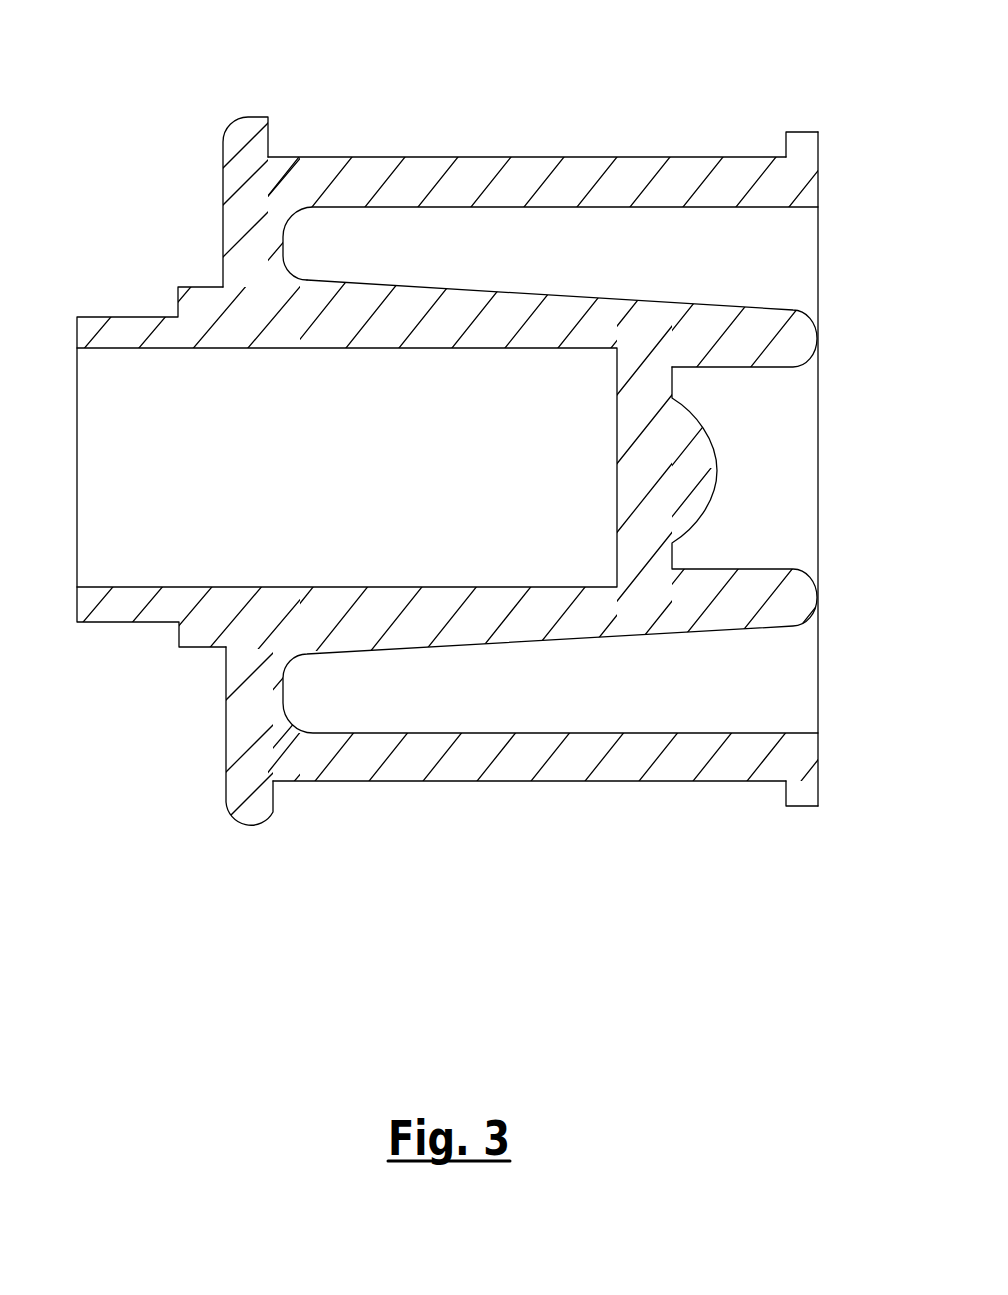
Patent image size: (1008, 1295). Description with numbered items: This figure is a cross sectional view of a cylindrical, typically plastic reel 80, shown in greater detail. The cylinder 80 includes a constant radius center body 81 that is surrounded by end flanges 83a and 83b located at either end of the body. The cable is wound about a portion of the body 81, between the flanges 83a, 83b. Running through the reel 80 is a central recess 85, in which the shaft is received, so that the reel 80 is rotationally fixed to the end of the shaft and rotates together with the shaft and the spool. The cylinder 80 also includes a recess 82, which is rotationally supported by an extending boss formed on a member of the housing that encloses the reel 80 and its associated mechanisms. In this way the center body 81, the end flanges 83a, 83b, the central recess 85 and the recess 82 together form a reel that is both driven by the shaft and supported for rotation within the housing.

The cylindrical reel 80 is at (537, 152).
The constant radius center body 81 is at (583, 157).
The recess 82 is at (733, 370).
The end flange 83a is at (268, 137).
The end flange 83b is at (783, 157).
The central recess 85 is at (383, 348).